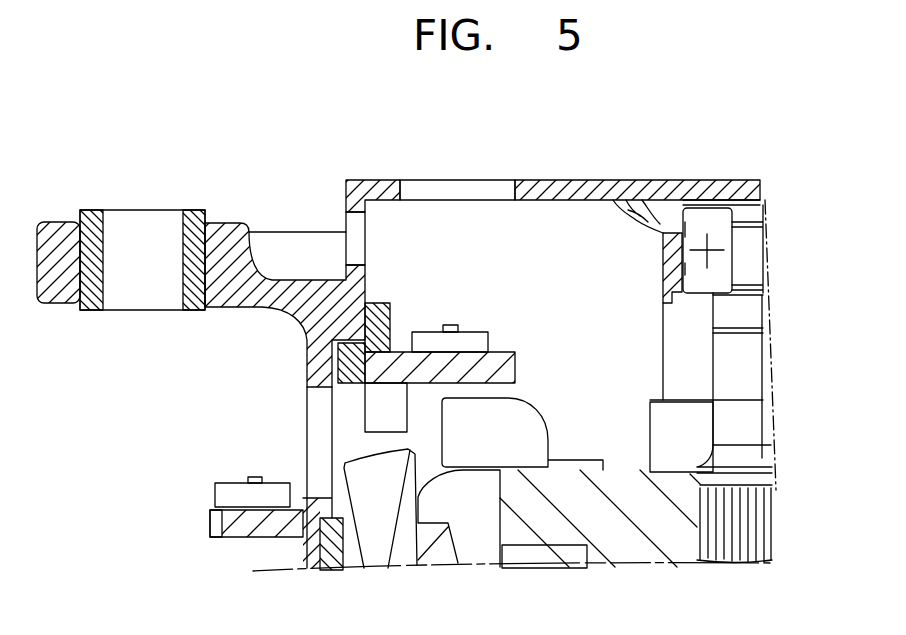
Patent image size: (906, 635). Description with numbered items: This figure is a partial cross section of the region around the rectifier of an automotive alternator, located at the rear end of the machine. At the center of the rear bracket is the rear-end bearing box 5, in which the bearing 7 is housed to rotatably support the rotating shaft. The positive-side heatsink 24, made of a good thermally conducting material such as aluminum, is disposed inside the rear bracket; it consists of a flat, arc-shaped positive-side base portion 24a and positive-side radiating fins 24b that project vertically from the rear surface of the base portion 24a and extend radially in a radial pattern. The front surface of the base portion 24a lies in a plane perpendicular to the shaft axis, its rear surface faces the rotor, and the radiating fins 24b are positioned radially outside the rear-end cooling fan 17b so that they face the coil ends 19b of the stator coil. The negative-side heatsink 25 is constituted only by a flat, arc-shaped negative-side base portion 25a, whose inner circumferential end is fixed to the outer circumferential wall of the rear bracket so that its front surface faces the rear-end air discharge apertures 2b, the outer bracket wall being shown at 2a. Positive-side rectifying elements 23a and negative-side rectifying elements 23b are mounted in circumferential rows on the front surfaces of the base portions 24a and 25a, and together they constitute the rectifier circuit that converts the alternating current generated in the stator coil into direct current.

The housing upper portion 2a is at (437, 189).
The rear-end air discharge apertures 2b is at (310, 395).
The rear-end bearing box 5 is at (652, 213).
The bearing 7 is at (707, 213).
The rear-end cooling fan 17b is at (538, 432).
The coil ends 19b is at (362, 466).
The positive-side rectifying elements 23a is at (473, 337).
The negative-side rectifying elements 23b is at (228, 492).
The positive-side heatsink 24 is at (495, 367).
The positive-side base portion 24a is at (512, 360).
The positive-side radiating fins 24b is at (397, 410).
The negative-side heatsink 25 is at (203, 523).
The negative-side base portion 25a is at (212, 533).